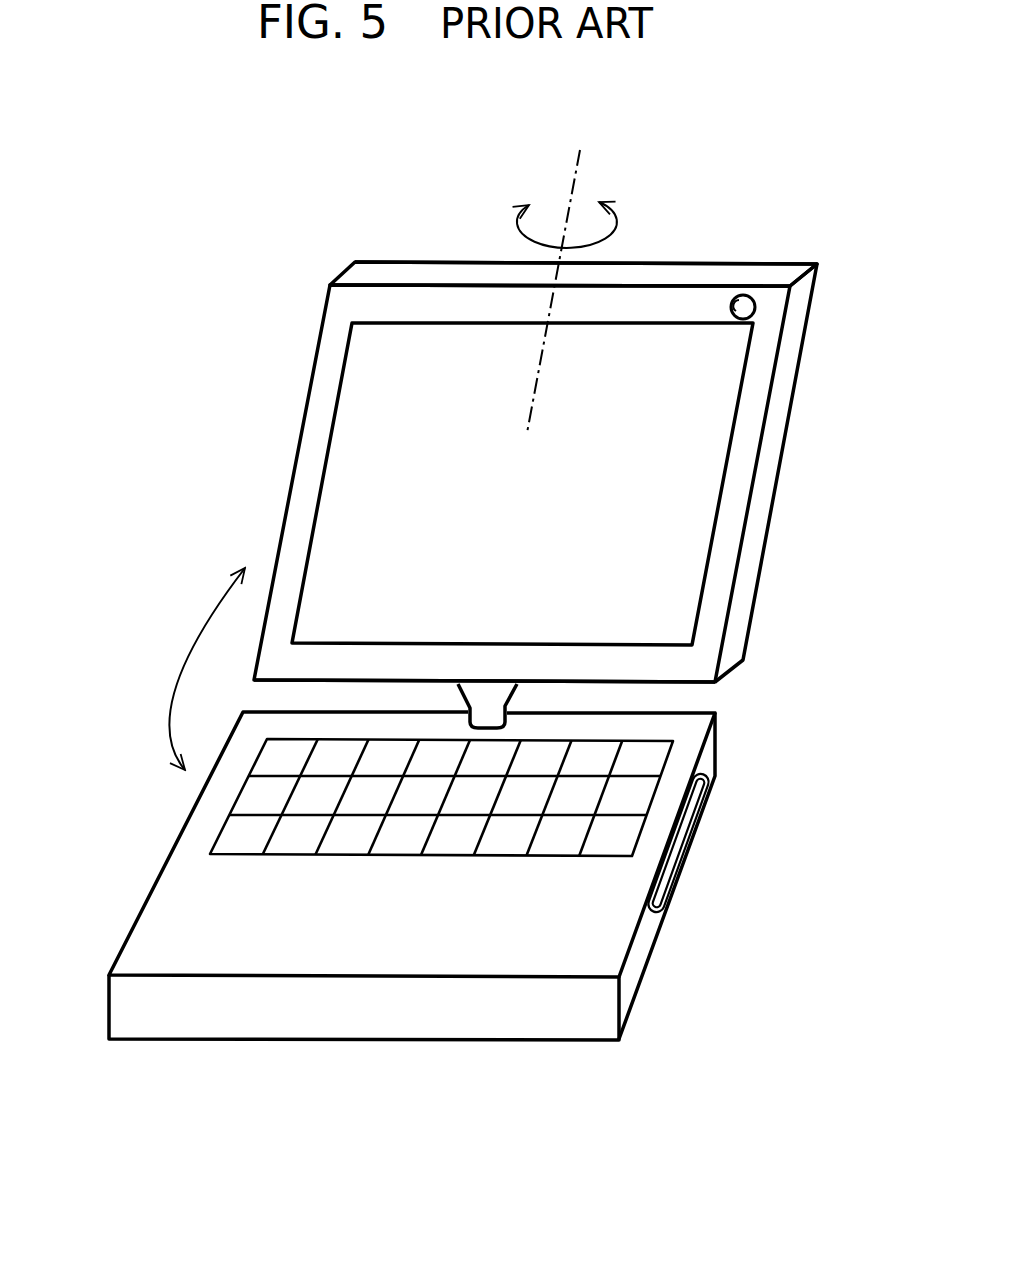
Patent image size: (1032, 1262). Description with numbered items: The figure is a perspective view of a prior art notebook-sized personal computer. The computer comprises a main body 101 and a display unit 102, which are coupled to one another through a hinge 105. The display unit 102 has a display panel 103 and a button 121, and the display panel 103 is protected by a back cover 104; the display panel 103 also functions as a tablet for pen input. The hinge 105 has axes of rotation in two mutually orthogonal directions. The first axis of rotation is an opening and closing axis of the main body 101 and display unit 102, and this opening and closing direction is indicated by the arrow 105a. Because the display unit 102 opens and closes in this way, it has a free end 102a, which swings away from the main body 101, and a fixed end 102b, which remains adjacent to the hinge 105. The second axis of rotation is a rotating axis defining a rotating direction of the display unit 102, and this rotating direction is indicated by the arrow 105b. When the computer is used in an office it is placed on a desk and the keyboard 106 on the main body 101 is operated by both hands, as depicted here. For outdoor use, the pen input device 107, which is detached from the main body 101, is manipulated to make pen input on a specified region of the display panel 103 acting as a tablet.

The main body 101 is at (338, 1005).
The display unit 102 is at (758, 507).
The free end 102a is at (540, 310).
The fixed end 102b is at (490, 664).
The display panel 103 is at (378, 383).
The back cover 104 is at (807, 342).
The hinge 105 is at (488, 697).
The arrow 105a is at (175, 669).
The arrow 105b is at (578, 291).
The keyboard 106 is at (261, 801).
The pen input device 107 is at (680, 842).
The button 121 is at (745, 305).